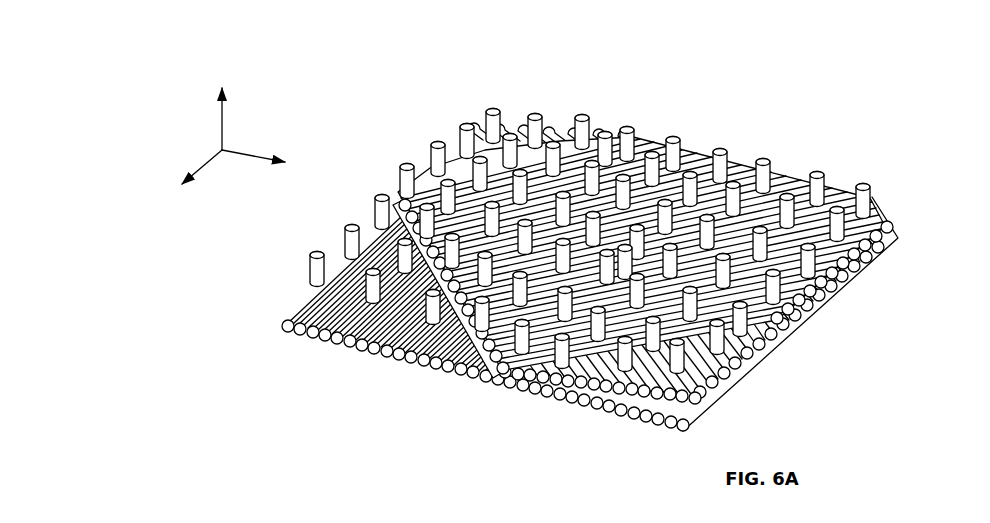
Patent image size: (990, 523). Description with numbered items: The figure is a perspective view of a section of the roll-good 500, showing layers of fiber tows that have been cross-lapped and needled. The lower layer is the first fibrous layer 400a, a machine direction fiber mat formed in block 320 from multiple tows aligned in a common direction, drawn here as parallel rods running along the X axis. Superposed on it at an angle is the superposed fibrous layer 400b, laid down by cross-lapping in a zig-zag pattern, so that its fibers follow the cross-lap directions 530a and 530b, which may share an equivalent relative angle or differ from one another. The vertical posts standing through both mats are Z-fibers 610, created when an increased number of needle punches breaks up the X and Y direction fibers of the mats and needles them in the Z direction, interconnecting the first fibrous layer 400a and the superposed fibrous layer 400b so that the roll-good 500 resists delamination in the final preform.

The roll-good 500 is at (566, 42).
The block 320 is at (285, 263).
The first fibrous layer 400a is at (332, 336).
The superposed fibrous layer 400b is at (683, 157).
The cross-lap direction 530a is at (438, 327).
The cross-lap direction 530b is at (588, 365).
The Z-fibers 610 is at (872, 190).